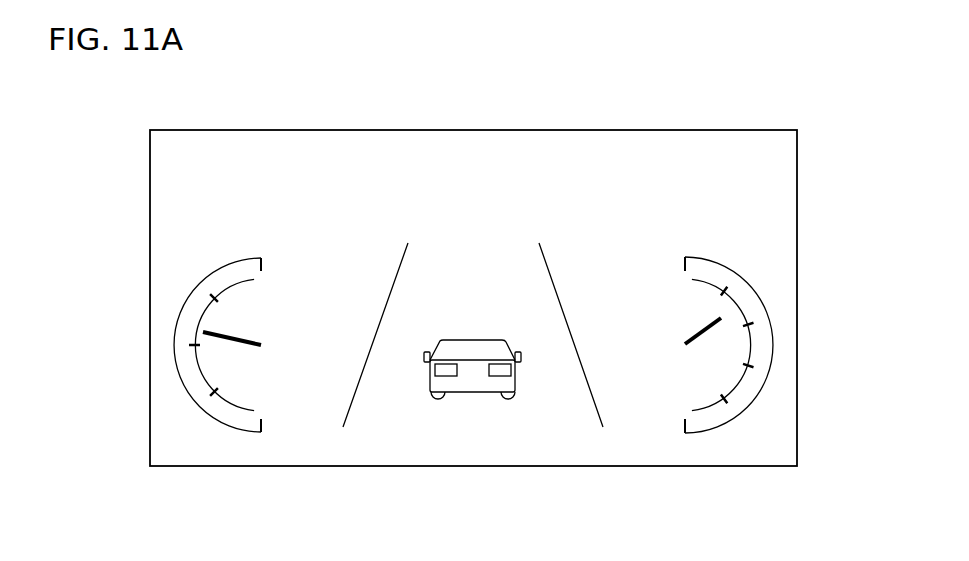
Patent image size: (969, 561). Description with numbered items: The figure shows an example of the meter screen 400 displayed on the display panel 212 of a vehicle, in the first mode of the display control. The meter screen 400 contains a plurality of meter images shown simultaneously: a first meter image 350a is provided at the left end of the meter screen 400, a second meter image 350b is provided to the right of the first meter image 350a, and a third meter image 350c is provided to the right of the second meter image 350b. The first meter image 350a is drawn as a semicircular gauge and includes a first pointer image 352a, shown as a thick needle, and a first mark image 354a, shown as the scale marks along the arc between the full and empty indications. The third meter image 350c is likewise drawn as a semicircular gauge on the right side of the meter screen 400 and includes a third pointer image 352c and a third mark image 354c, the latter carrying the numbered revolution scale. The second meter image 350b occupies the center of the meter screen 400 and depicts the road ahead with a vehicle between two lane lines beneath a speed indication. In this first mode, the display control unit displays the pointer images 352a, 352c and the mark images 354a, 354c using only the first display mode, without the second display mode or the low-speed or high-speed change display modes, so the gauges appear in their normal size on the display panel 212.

The display panel 212 is at (497, 540).
The meter screen 400 is at (150, 433).
The first meter image 350a is at (237, 259).
The first pointer image 352a is at (233, 342).
The first mark image 354a is at (193, 347).
The second meter image 350b is at (557, 250).
The third meter image 350c is at (725, 259).
The third pointer image 352c is at (707, 320).
The third mark image 354c is at (737, 314).